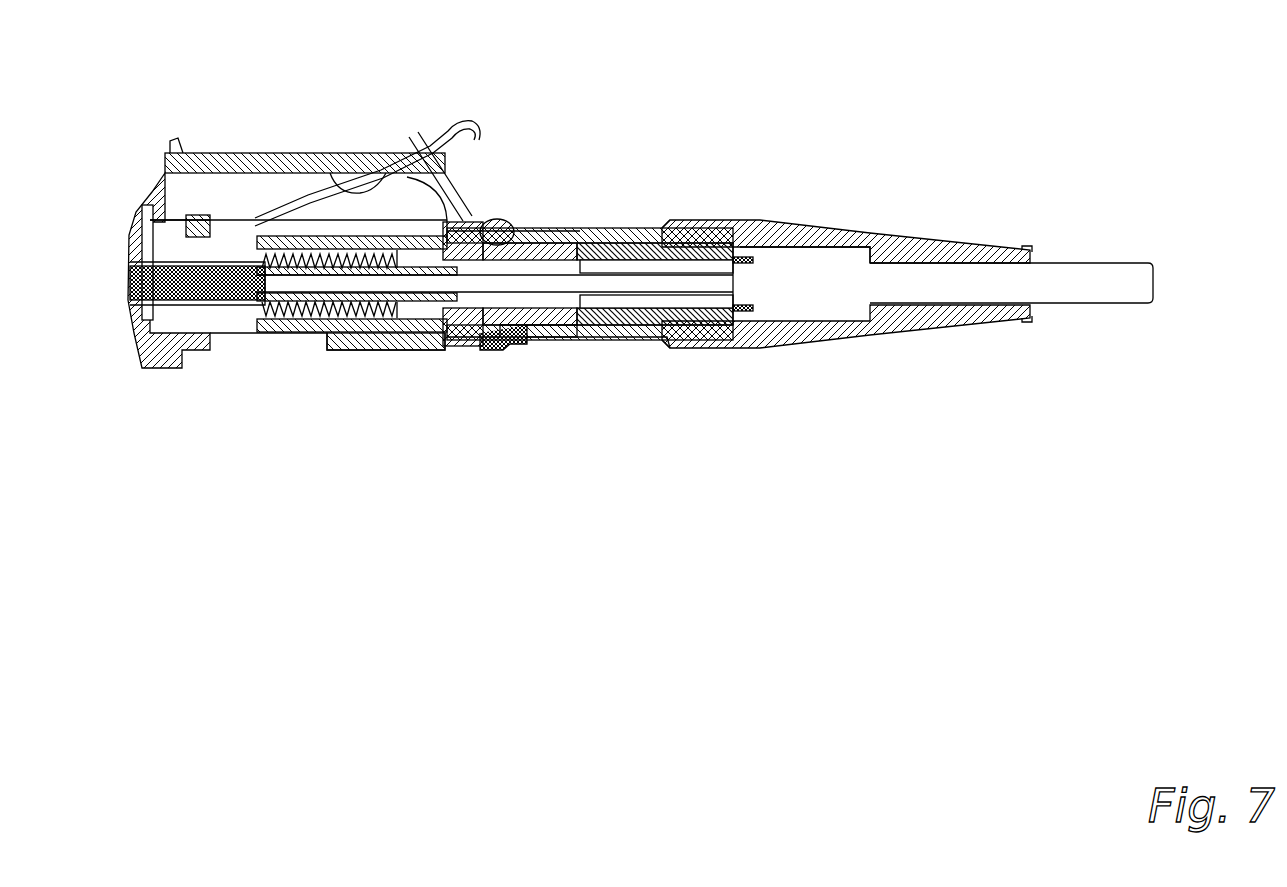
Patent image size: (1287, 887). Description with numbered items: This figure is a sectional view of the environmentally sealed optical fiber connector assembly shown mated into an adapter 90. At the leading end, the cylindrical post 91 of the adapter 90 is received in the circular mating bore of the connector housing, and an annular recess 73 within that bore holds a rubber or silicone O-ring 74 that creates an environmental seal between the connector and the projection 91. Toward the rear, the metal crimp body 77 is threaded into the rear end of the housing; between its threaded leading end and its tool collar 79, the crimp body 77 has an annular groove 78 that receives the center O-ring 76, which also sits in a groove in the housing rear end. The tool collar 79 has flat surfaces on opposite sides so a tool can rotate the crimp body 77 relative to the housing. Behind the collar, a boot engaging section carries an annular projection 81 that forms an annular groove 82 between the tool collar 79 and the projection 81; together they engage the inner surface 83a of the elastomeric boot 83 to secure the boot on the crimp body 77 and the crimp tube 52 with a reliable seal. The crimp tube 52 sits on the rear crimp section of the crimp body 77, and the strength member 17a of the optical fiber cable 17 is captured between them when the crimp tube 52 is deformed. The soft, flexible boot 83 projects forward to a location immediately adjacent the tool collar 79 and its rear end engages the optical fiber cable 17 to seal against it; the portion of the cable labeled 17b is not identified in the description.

The optical fiber cable 17 is at (1063, 277).
The strength member 17a is at (703, 350).
The tube housing portion 17b is at (237, 340).
The crimp tube 52 is at (667, 223).
The annular recess 73 is at (200, 217).
The O-ring 74 is at (197, 340).
The center O-ring 76 is at (505, 343).
The metal crimp body 77 is at (542, 340).
The annular groove 78 is at (543, 222).
The tool collar 79 is at (521, 232).
The annular projection 81 is at (583, 228).
The annular groove 82 is at (572, 228).
The elastomeric boot 83 is at (780, 220).
The inner surface 83a is at (573, 340).
The adapter 90 is at (190, 215).
The cylindrical post 91 is at (148, 355).